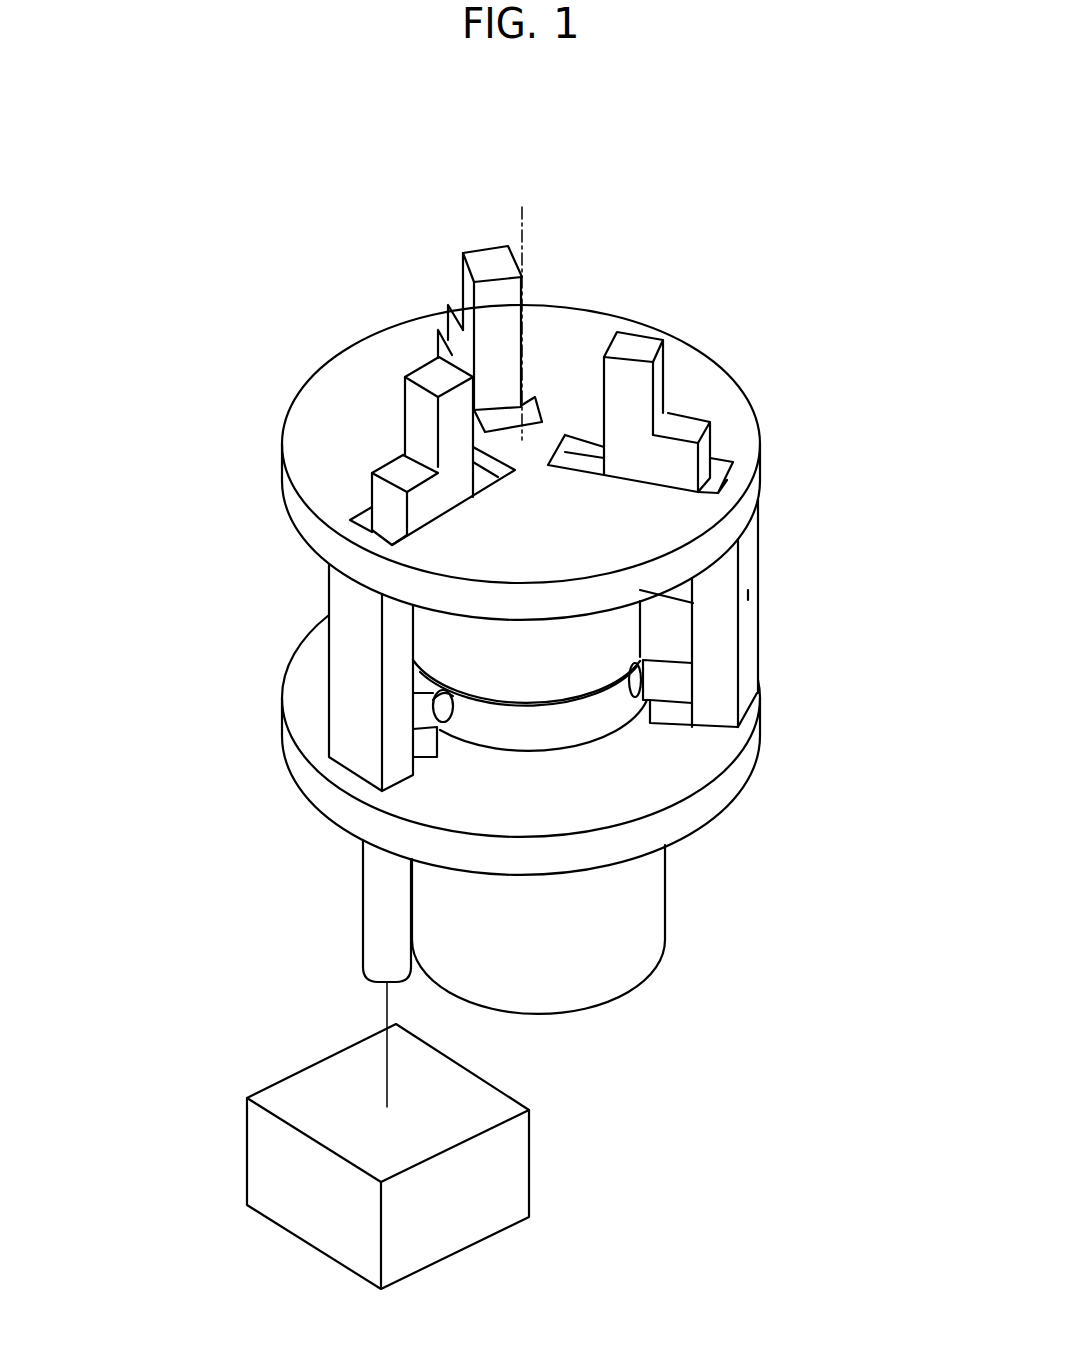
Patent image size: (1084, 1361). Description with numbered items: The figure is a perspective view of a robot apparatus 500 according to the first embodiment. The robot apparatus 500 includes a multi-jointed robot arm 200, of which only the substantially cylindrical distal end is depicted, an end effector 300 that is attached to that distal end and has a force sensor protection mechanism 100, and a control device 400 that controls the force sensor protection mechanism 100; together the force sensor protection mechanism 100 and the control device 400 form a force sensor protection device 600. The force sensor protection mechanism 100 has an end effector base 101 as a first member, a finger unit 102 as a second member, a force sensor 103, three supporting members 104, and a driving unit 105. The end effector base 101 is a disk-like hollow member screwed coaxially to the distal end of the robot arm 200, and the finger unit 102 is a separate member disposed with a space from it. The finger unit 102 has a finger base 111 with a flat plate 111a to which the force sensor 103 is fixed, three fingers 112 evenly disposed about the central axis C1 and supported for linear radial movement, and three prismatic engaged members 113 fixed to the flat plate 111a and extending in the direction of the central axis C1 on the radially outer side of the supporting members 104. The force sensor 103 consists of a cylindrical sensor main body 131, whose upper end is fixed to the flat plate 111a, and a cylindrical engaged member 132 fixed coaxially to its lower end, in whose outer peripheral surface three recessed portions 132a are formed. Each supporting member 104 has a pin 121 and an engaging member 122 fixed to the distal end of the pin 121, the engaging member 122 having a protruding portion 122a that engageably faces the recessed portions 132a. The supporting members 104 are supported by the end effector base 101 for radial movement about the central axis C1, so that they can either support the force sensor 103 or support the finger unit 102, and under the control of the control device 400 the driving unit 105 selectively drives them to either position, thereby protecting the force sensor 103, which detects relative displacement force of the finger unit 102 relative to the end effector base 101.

The robot apparatus 500 is at (552, 211).
The central axis C1 is at (522, 235).
The end effector 300 is at (310, 366).
The fingers 112 is at (463, 278).
The finger base 111 is at (758, 483).
The engaged members 113 is at (347, 597).
The finger unit 102 is at (862, 323).
The flat plate 111a is at (750, 593).
The force sensor 103 is at (220, 512).
The sensor main body 131 is at (440, 625).
The engaged member 132 is at (507, 723).
The recessed portions 132a is at (415, 700).
The force sensor protection device 600 is at (142, 797).
The force sensor protection mechanism 100 is at (272, 658).
The control device 400 is at (299, 1087).
The end effector base 101 is at (743, 770).
The supporting members 104 is at (852, 708).
The engaging member 122 is at (678, 687).
The pin 121 is at (678, 720).
The protruding portion 122a is at (640, 697).
The robot arm 200 is at (643, 902).
The driving unit 105 is at (417, 906).